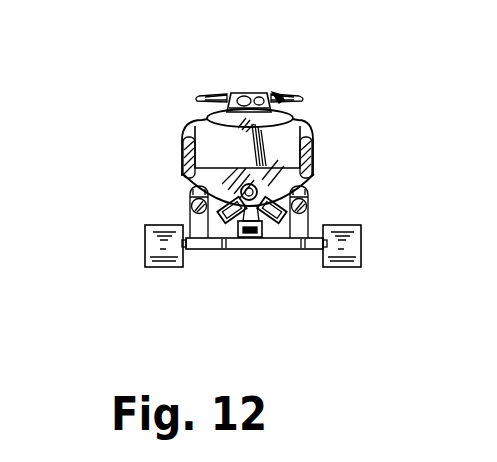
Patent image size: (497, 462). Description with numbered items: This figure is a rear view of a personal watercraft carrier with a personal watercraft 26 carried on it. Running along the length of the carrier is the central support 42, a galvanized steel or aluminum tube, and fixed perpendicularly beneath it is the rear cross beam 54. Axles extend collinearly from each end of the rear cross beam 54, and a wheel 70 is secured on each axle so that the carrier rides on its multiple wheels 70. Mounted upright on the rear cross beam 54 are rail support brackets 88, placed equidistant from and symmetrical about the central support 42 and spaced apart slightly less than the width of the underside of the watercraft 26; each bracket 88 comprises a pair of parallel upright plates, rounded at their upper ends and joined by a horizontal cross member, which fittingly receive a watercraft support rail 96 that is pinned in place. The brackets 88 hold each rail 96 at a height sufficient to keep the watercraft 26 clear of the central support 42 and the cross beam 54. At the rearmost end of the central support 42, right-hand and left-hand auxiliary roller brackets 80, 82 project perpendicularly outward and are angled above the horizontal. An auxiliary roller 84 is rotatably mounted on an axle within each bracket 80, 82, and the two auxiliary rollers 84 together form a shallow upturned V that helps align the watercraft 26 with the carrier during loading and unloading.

The personal watercraft 26 is at (288, 136).
The auxiliary roller 84 is at (185, 162).
The watercraft support rail 96 is at (191, 201).
The rail support bracket 88 is at (309, 217).
The right-hand auxiliary roller bracket 80 is at (233, 214).
The left-hand auxiliary roller bracket 82 is at (268, 213).
The central support 42 is at (251, 237).
The rear cross beam 54 is at (210, 245).
The wheel 70 is at (148, 257).